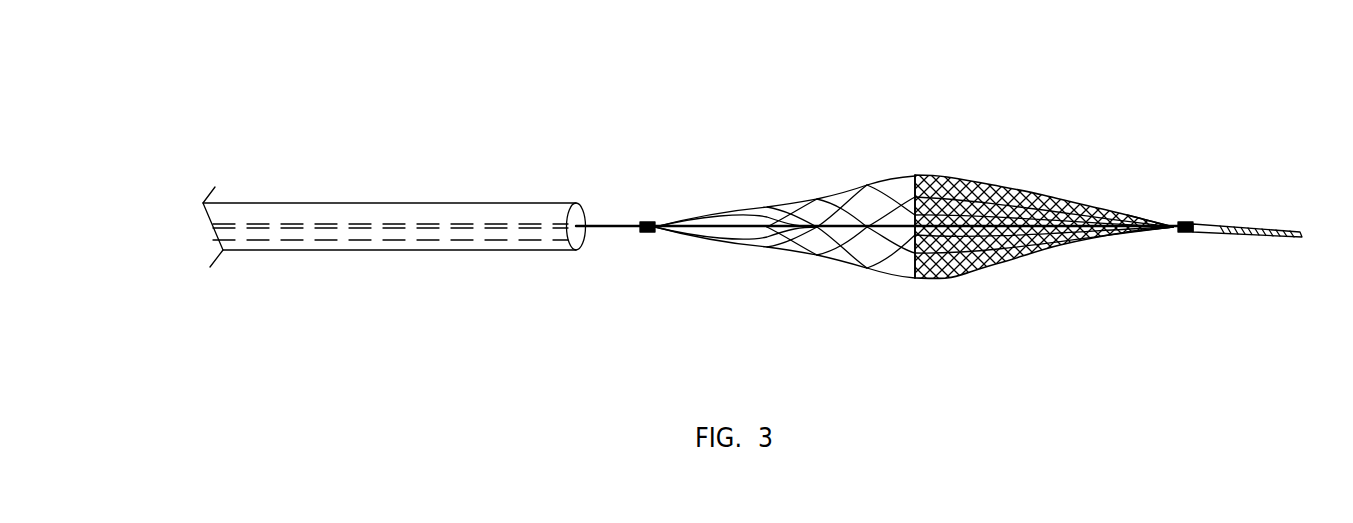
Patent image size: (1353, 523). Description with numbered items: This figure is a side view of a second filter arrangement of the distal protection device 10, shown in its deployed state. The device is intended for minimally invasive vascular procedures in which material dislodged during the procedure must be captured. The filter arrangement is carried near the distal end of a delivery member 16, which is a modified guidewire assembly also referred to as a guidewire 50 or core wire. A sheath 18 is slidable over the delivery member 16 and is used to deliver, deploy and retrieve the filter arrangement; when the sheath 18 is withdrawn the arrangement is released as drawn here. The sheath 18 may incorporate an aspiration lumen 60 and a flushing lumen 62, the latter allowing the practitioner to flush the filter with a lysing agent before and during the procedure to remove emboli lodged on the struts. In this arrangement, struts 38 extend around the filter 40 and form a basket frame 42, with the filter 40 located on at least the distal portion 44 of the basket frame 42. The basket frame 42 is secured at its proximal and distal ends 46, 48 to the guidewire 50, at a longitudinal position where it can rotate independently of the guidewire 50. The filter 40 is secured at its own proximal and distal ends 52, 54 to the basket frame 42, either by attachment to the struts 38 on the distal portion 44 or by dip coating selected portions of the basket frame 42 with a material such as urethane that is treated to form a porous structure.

The distal protection device 10 is at (338, 177).
The delivery member 16 is at (612, 223).
The sheath 18 is at (390, 203).
The struts 38 is at (740, 207).
The filter 40 is at (1023, 194).
The basket frame 42 is at (930, 293).
The distal portion 44 is at (1037, 272).
The proximal end 46 is at (646, 222).
The distal end 48 is at (1188, 232).
The guidewire 50 is at (1205, 222).
The proximal end 52 is at (913, 273).
The distal end 54 is at (1160, 233).
The aspiration lumen 60 is at (402, 243).
The flushing lumen 62 is at (581, 252).